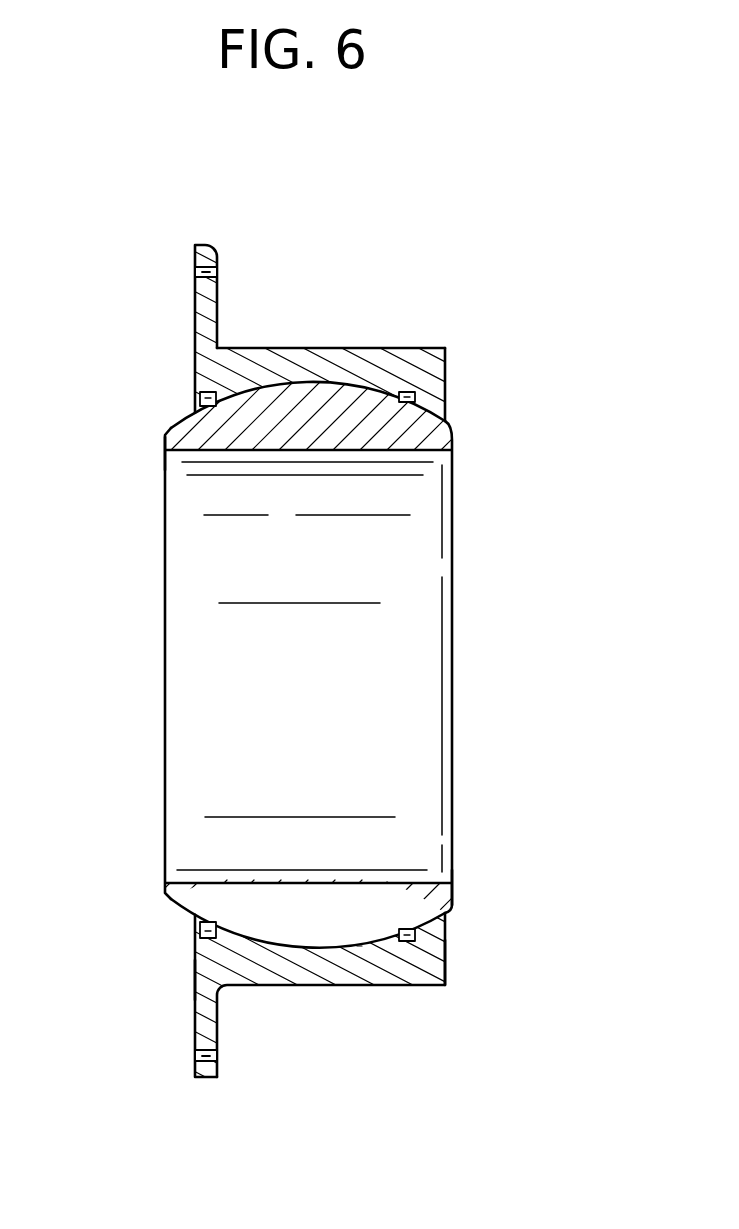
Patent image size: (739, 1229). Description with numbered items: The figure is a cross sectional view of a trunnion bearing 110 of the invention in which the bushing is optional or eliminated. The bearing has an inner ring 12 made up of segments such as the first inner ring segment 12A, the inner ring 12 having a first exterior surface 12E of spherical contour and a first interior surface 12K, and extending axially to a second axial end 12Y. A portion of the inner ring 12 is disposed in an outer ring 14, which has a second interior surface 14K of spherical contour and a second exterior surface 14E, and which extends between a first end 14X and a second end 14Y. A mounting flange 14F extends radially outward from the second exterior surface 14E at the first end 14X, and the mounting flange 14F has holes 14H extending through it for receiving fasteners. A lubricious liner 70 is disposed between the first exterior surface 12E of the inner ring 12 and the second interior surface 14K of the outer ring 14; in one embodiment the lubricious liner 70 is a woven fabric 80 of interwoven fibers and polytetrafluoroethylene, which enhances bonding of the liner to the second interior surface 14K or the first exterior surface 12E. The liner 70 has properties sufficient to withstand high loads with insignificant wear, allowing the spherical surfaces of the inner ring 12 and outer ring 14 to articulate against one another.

The trunnion bearing 110 is at (518, 268).
The inner ring 12 is at (185, 437).
The first inner ring segment 12A is at (193, 900).
The first exterior surface 12E is at (190, 418).
The second axial end 12Y is at (453, 897).
The first interior surface 12K is at (288, 450).
The outer ring 14 is at (360, 365).
The second exterior surface 14E is at (238, 348).
The second end 14Y is at (445, 965).
The second interior surface 14K is at (265, 393).
The mounting flange 14F is at (207, 1020).
The first end 14X is at (195, 983).
The holes 14H is at (195, 268).
The lubricious liner 70 is at (357, 946).
The woven fabric 80 is at (200, 392).